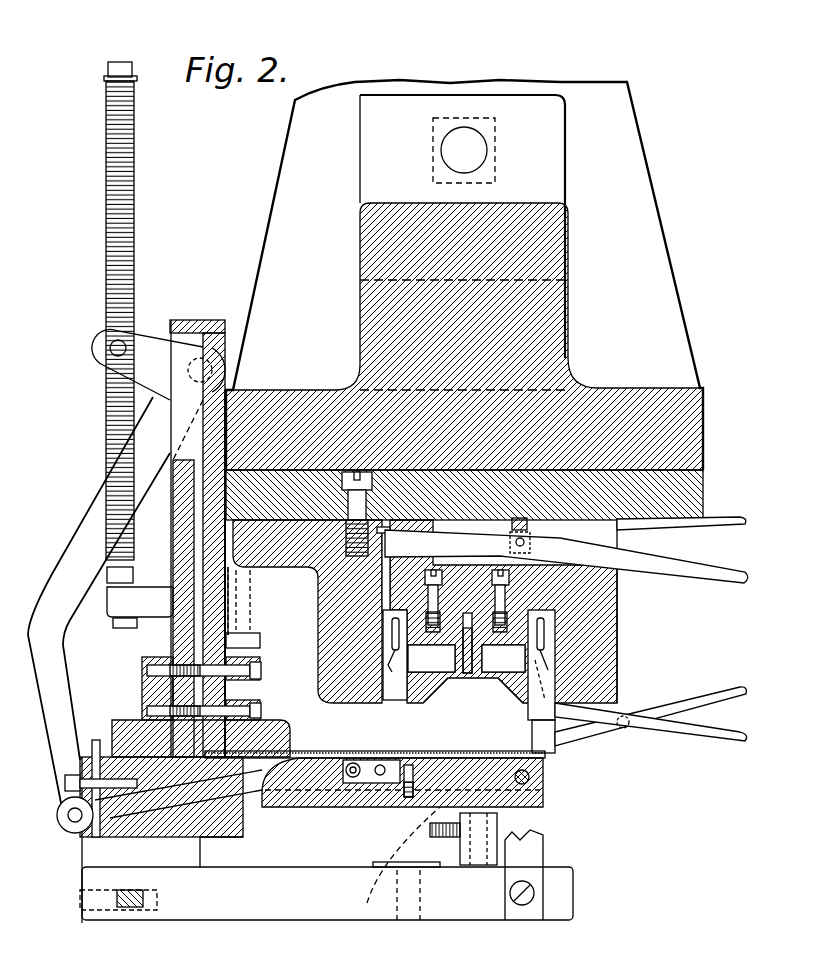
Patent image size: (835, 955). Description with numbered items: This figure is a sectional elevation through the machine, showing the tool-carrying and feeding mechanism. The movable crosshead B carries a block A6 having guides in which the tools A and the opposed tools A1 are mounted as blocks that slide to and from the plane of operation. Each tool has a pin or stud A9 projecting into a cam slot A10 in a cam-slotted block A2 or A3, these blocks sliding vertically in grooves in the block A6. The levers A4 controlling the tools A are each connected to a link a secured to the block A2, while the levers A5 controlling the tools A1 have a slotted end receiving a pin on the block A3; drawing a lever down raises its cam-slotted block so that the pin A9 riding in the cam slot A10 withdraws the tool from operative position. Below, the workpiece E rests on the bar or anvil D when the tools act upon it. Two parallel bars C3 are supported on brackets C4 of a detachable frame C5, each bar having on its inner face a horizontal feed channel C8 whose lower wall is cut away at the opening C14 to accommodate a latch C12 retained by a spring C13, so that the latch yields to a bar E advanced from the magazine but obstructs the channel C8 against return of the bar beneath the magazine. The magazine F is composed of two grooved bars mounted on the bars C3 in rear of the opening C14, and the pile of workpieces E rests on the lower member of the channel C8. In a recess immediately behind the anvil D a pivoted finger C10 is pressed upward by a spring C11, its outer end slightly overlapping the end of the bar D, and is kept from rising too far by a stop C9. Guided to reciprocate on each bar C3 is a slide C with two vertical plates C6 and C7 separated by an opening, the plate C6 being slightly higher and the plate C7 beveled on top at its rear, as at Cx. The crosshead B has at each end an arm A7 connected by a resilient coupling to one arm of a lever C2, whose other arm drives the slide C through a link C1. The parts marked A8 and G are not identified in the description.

The movable crosshead B is at (395, 322).
The tools A is at (420, 625).
The tools A1 is at (560, 625).
The cam-slotted block A2 is at (433, 657).
The cam-slotted block A3 is at (600, 612).
The lever A4 is at (740, 522).
The lever A5 is at (745, 700).
The block A6 is at (588, 572).
The arm A7 is at (157, 600).
The plate A8 is at (665, 490).
The pin A9 is at (395, 682).
The cam slot A10 is at (414, 688).
The link a is at (384, 557).
The slide C is at (222, 368).
The link C1 is at (106, 410).
The lever C2 is at (55, 617).
The bar C3 is at (345, 805).
The bracket C4 is at (90, 855).
The detachable frame C5 is at (411, 859).
The plate C6 is at (245, 822).
The plate C7 is at (205, 800).
The feed channel C8 is at (343, 753).
The stop C9 is at (383, 805).
The pivoted finger C10 is at (435, 780).
The spring C11 is at (412, 770).
The latch C12 is at (335, 712).
The spring C13 is at (157, 737).
The opening C14 is at (263, 805).
The bevel Cx is at (133, 747).
The anvil D is at (467, 752).
The workpiece E is at (262, 706).
The magazine F is at (197, 528).
The center pin G is at (463, 662).